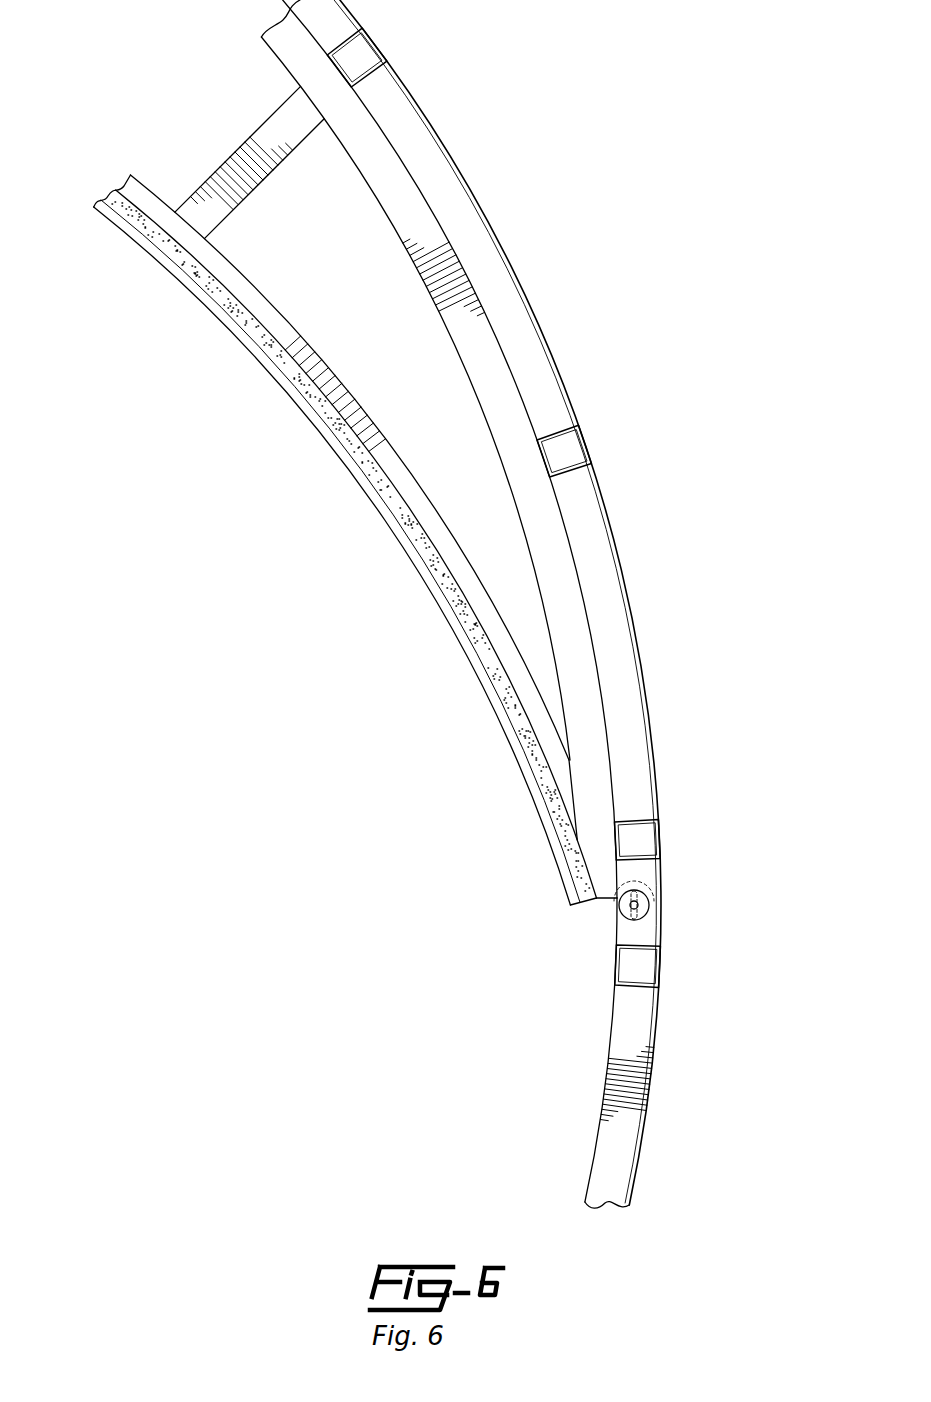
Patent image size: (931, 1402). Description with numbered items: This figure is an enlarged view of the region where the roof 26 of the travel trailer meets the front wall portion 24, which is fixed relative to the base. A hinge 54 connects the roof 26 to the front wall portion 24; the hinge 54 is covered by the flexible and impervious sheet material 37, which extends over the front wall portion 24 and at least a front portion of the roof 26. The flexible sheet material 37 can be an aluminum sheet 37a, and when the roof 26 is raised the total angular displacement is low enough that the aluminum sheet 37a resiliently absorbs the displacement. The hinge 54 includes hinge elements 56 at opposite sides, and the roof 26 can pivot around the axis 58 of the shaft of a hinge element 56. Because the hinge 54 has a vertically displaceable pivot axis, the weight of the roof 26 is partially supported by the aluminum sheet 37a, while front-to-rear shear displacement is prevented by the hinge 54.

The front wall portion 24 is at (622, 1145).
The roof 26 is at (423, 151).
The flexible sheet material 37 is at (658, 785).
The aluminum sheet 37a is at (661, 847).
The hinge 54 is at (604, 921).
The hinge element 56 is at (632, 869).
The axis 58 is at (649, 906).